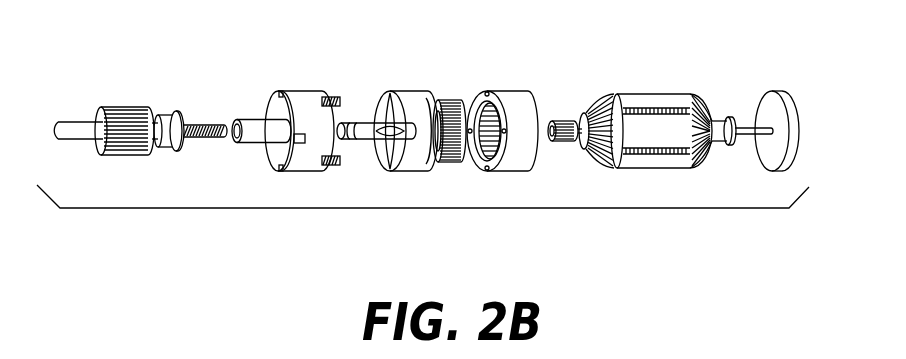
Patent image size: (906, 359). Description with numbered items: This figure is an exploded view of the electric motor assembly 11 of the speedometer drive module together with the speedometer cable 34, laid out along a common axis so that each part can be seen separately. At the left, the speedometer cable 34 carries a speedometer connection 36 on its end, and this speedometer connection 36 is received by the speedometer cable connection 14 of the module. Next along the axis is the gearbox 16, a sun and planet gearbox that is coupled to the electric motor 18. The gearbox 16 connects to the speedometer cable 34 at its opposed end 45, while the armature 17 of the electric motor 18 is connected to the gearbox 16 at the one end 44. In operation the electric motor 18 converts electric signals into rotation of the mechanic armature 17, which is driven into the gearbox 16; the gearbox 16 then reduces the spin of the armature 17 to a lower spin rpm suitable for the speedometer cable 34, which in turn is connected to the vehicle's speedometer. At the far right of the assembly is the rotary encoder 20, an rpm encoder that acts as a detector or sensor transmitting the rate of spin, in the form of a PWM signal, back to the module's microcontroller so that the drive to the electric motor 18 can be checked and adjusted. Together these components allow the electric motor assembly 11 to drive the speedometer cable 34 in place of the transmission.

The electric motor assembly 11 is at (714, 38).
The speedometer cable 34 is at (73, 127).
The speedometer connection 36 is at (160, 103).
The speedometer cable connection 14 is at (282, 107).
The opposed end 45 is at (347, 125).
The gearbox 16 is at (487, 92).
The one end 44 is at (532, 108).
The armature 17 is at (563, 118).
The electric motor 18 is at (634, 103).
The rotary encoder 20 is at (786, 95).